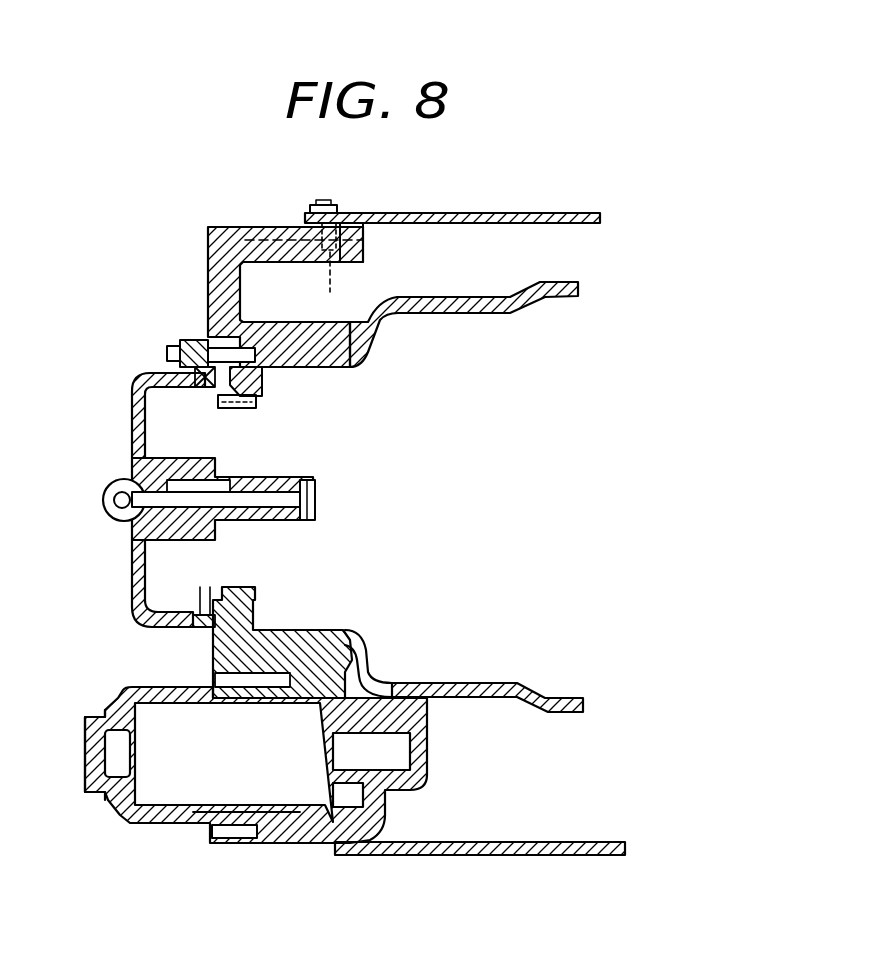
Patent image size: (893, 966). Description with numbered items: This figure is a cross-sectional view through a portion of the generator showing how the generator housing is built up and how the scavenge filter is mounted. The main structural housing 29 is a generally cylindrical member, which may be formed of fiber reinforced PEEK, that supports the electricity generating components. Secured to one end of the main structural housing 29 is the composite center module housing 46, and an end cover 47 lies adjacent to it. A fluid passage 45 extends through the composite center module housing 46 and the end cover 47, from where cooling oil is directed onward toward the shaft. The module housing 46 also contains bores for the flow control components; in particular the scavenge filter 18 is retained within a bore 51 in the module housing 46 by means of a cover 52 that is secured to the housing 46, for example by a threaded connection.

The scavenge filter 18 is at (155, 798).
The main structural housing 29 is at (470, 307).
The fluid passage 45 is at (135, 488).
The composite center module housing 46 is at (215, 255).
The end cover 47 is at (130, 604).
The bore 51 is at (311, 823).
The cover 52 is at (85, 722).